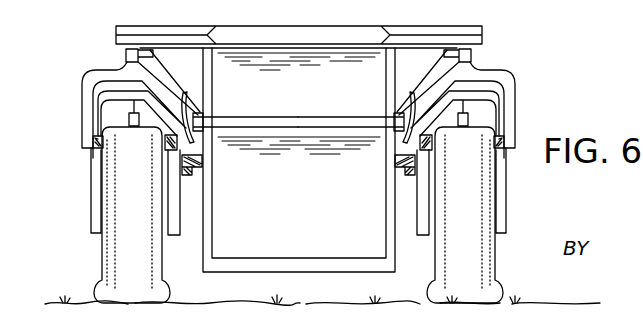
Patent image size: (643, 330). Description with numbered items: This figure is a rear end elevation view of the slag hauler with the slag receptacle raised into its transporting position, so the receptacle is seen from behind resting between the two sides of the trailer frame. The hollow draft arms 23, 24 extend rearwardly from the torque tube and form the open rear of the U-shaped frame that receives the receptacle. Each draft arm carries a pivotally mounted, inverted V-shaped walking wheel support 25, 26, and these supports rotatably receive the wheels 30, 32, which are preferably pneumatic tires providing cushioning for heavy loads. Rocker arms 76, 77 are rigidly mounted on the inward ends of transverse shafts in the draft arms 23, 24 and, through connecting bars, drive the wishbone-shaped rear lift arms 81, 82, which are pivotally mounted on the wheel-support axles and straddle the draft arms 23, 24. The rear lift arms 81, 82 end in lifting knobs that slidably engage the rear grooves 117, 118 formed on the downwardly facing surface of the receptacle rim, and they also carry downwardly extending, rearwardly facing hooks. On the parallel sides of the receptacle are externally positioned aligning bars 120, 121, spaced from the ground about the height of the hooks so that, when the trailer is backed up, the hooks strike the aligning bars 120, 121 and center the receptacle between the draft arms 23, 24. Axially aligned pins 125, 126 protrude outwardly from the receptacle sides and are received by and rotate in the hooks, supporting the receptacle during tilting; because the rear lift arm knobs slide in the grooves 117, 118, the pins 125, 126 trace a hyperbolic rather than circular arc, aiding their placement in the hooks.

The draft arm 23 is at (97, 117).
The draft arm 24 is at (500, 128).
The walking wheel support 25 is at (92, 188).
The walking wheel support 26 is at (500, 212).
The wheel 30 is at (112, 258).
The wheel 32 is at (490, 270).
The rocker arm 76 is at (191, 113).
The rocker arm 77 is at (408, 113).
The rear lift arm 81 is at (75, 82).
The rear lift arm 82 is at (526, 88).
The rear groove 117 is at (124, 60).
The rear groove 118 is at (468, 64).
The aligning bar 120 is at (201, 120).
The aligning bar 121 is at (403, 120).
The pin 125 is at (200, 166).
The pin 126 is at (398, 166).